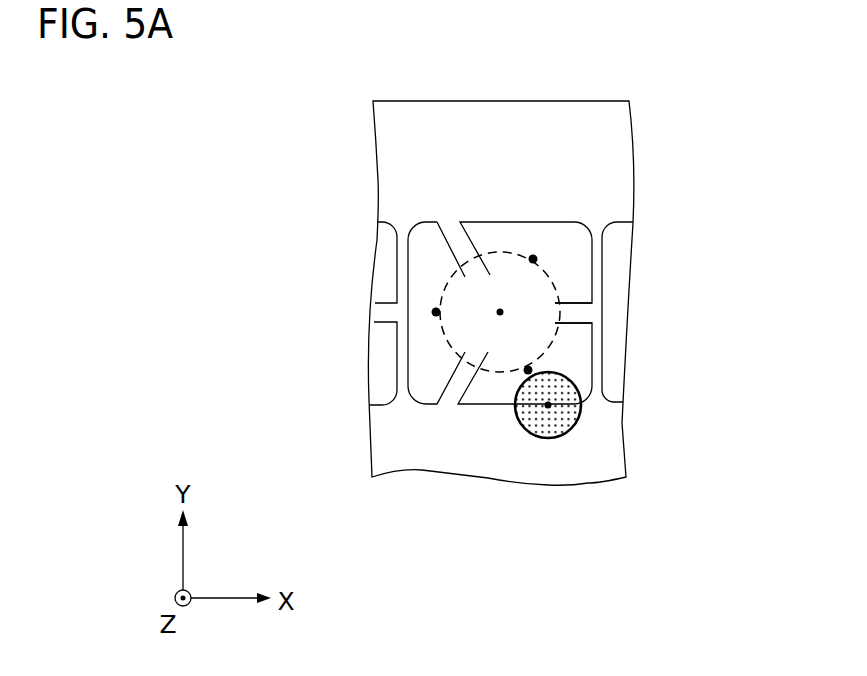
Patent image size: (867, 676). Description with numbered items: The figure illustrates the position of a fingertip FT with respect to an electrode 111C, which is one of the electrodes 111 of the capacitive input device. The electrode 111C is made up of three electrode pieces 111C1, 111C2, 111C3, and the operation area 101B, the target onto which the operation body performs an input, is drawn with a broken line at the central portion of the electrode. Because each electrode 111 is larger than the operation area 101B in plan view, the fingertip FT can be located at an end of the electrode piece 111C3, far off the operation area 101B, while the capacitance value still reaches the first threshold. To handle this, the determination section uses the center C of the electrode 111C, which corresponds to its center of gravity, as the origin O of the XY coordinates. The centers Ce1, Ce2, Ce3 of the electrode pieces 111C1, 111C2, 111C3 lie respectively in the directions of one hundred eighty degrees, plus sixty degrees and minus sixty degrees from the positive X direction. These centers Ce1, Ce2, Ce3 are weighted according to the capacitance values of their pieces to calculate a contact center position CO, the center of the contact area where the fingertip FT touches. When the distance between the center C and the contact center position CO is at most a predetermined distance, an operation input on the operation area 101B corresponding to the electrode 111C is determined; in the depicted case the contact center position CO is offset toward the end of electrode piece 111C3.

The operation area 101B is at (515, 252).
The electrode 111 is at (500, 208).
The electrode 111C is at (497, 222).
The electrode piece 111C1 is at (420, 263).
The electrode piece 111C2 is at (587, 264).
The electrode piece 111C3 is at (585, 343).
The center C is at (583, 312).
The origin O is at (500, 312).
The center Ce1 is at (432, 312).
The center Ce2 is at (536, 257).
The center Ce3 is at (531, 371).
The contact center position CO is at (580, 410).
The fingertip FT is at (551, 440).